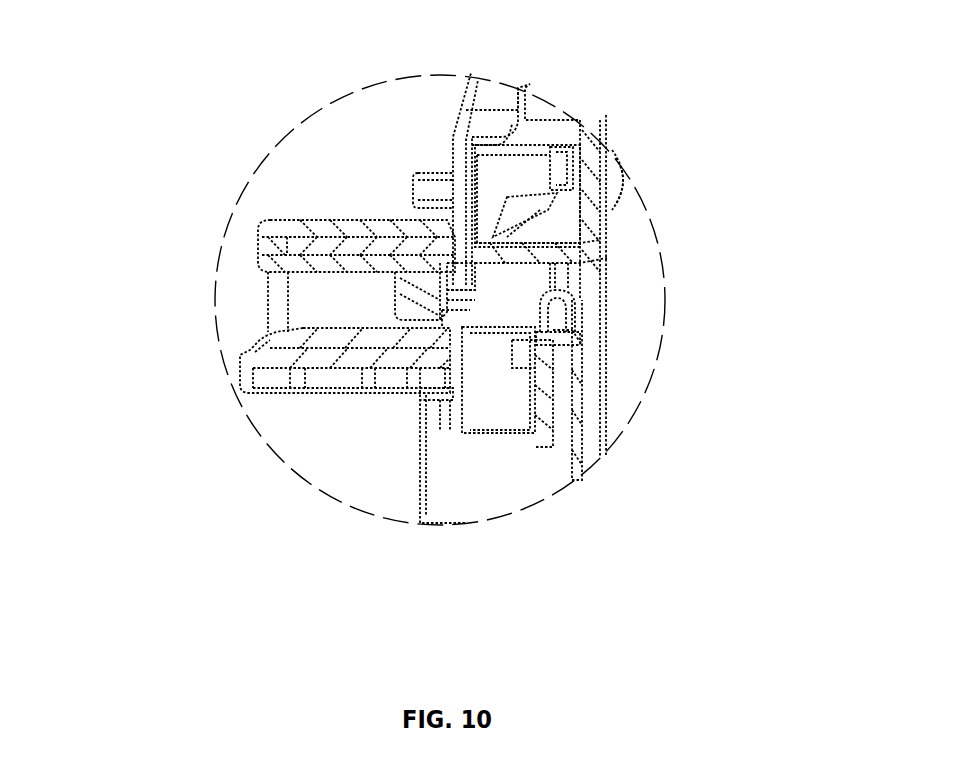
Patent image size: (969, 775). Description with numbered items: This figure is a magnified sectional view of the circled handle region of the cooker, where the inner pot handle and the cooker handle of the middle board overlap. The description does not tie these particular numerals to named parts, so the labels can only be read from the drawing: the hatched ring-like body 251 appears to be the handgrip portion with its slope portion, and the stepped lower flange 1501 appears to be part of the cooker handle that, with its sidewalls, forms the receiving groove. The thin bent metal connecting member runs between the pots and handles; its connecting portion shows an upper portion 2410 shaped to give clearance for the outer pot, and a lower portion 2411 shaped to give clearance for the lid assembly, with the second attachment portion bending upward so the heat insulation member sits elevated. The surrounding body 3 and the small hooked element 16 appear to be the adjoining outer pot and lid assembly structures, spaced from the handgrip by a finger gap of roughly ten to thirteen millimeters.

The housing 3 is at (462, 180).
The sealing ring 251 is at (325, 270).
The flange 1501 is at (272, 347).
The engaging portion 2410 is at (543, 250).
The hook 16 is at (553, 297).
The protrusion 2411 is at (455, 272).